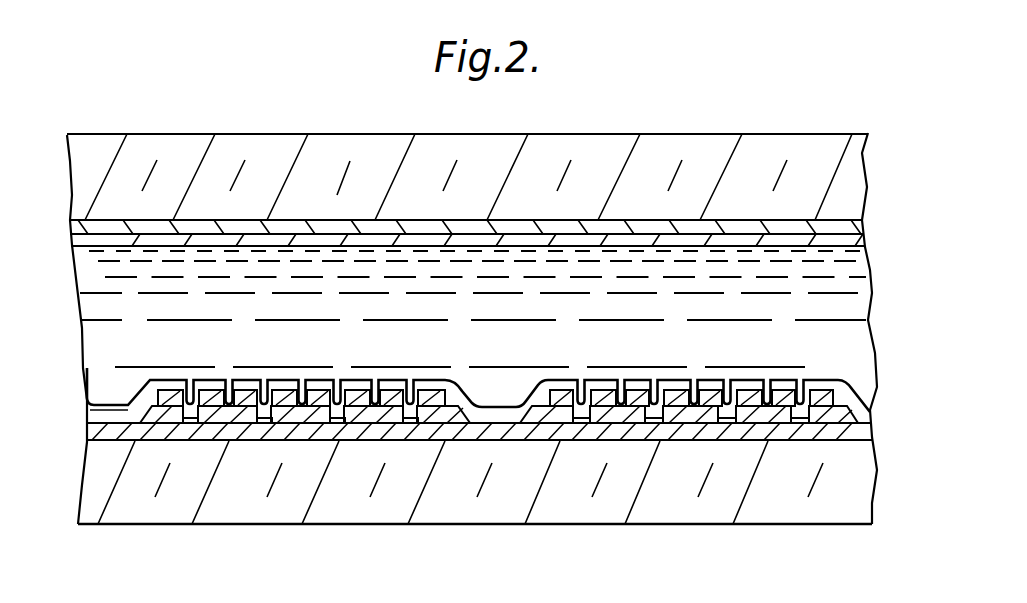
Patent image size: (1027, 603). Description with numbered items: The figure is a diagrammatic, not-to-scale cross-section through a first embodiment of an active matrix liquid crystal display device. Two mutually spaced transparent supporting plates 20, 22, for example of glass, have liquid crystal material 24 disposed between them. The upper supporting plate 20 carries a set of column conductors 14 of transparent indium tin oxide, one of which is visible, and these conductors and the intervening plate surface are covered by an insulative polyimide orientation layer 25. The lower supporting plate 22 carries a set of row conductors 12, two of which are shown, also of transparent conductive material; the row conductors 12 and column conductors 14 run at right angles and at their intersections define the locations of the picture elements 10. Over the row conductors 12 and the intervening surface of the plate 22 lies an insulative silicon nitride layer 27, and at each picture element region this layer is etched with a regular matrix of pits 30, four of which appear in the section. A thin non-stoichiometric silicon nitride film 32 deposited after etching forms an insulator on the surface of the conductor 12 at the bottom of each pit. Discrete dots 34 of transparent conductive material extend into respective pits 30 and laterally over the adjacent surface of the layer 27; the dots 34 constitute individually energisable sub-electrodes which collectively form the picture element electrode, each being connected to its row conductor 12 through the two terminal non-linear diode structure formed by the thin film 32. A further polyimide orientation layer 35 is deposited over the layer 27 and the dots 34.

The picture element 10 is at (161, 367).
The row conductor 12 is at (297, 430).
The column conductor 14 is at (670, 228).
The upper supporting plate 20 is at (780, 150).
The lower supporting plate 22 is at (722, 504).
The liquid crystal material 24 is at (306, 253).
The orientation layer 25 is at (561, 240).
The insulative layer 27 is at (100, 430).
The pit 30 is at (190, 402).
The thin film of insulator 32 is at (265, 423).
The dot 34 is at (244, 392).
The further orientation layer 35 is at (93, 410).